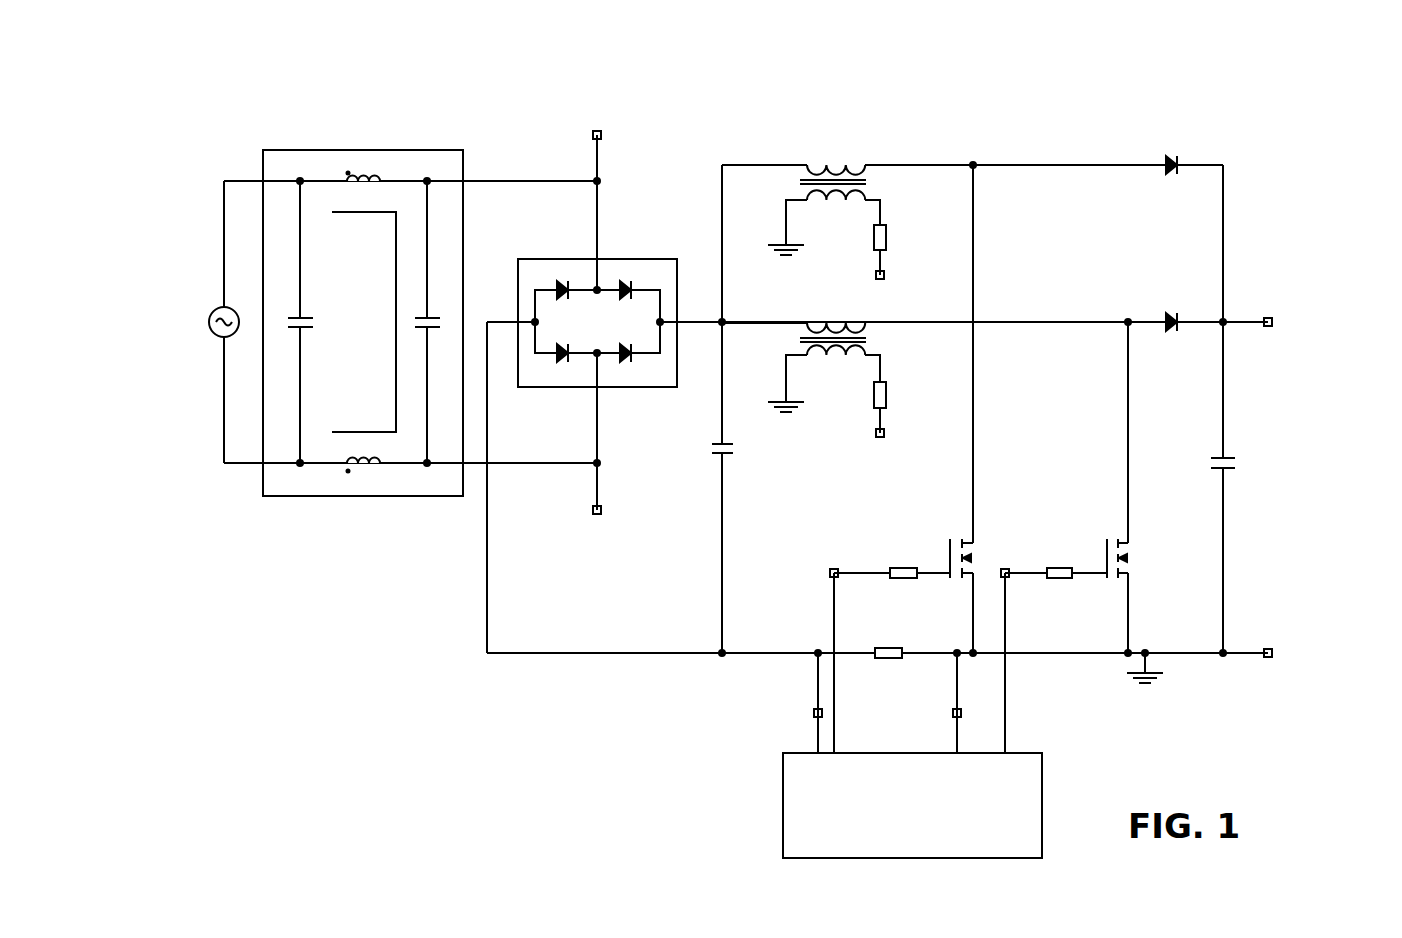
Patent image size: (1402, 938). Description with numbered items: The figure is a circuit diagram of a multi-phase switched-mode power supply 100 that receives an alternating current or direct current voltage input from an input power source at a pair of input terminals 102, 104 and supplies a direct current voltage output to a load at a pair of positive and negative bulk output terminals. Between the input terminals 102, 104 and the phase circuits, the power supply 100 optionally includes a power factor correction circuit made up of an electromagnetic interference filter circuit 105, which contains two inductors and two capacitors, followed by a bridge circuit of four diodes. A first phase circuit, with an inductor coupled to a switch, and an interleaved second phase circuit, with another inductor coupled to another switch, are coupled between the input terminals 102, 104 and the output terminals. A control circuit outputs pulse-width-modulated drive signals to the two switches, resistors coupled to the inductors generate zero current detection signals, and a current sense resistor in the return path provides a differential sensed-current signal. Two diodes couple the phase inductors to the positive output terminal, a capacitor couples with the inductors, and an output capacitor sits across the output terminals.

The multi-phase switched-mode power supply 100 is at (1198, 56).
The input terminal 102 is at (216, 172).
The input terminal 104 is at (214, 472).
The electromagnetic interference filter circuit 105 is at (443, 158).